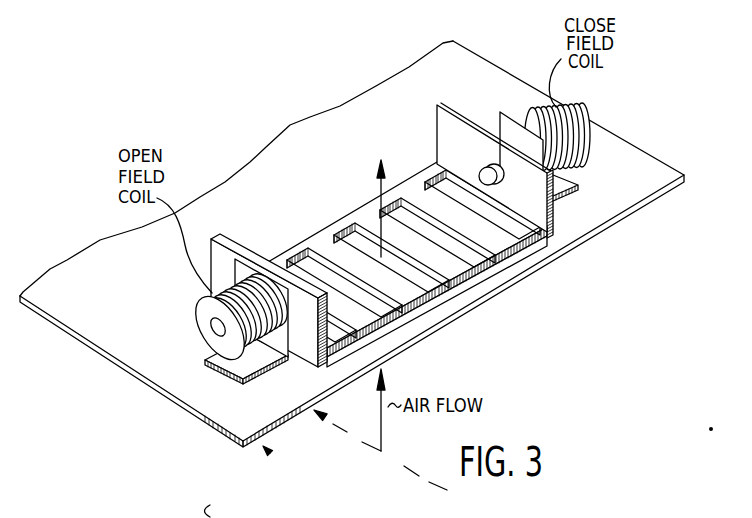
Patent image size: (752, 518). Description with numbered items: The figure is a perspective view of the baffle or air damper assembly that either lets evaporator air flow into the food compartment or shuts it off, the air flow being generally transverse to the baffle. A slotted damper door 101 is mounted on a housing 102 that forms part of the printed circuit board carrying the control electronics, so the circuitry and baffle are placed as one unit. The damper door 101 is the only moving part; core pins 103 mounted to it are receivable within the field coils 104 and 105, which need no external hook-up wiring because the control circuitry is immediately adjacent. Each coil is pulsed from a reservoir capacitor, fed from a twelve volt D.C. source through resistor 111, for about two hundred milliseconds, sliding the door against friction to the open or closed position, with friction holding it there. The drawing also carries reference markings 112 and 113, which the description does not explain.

The slotted damper door 101 is at (500, 243).
The housing 102 is at (467, 292).
The core pins 103 is at (436, 147).
The field coil 104 is at (231, 347).
The field coil 105 is at (580, 100).
The resistor 111 is at (218, 507).
The dashed reference line 112 is at (447, 490).
The direction arrow 113 is at (270, 453).